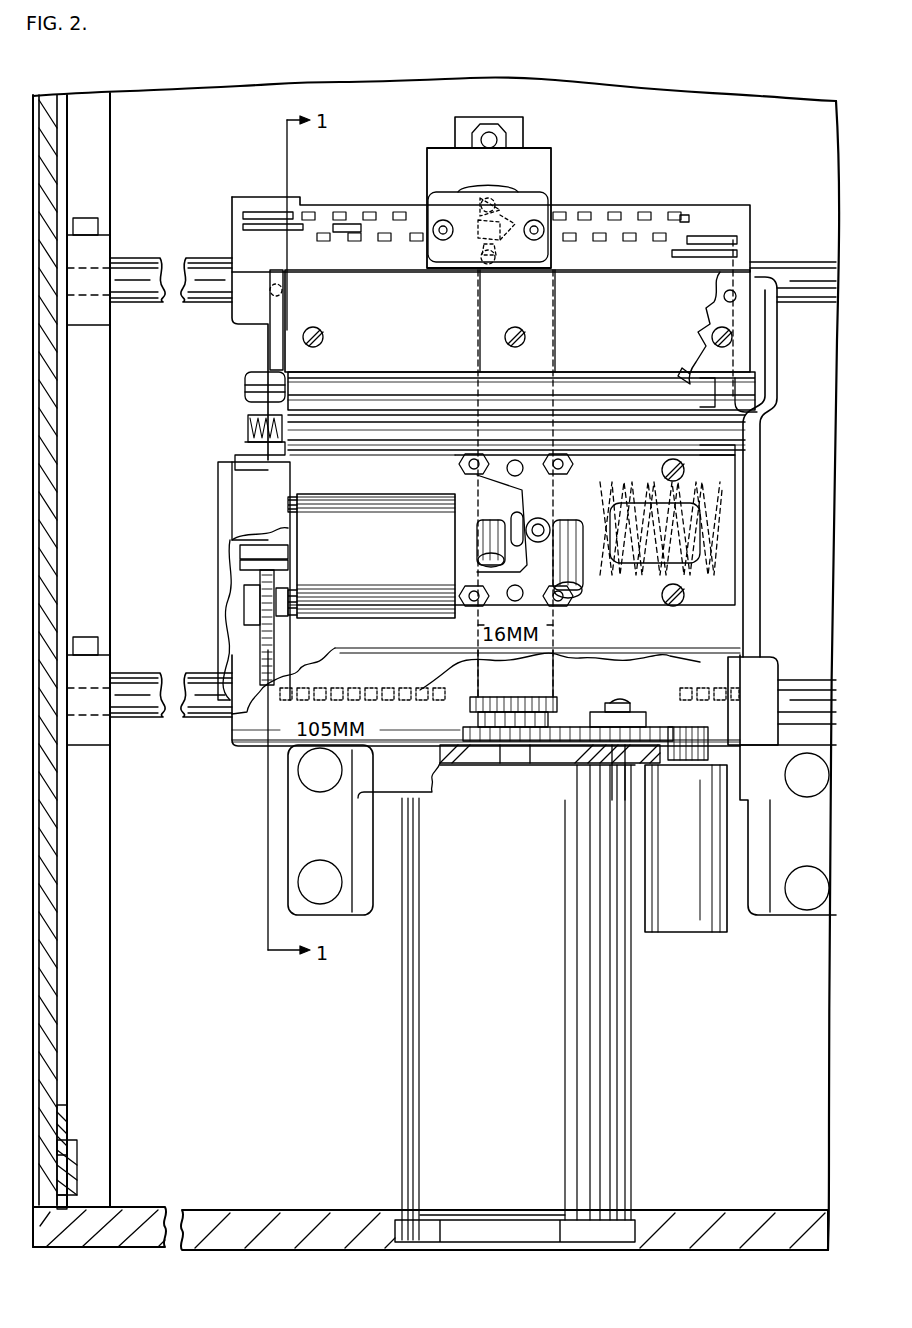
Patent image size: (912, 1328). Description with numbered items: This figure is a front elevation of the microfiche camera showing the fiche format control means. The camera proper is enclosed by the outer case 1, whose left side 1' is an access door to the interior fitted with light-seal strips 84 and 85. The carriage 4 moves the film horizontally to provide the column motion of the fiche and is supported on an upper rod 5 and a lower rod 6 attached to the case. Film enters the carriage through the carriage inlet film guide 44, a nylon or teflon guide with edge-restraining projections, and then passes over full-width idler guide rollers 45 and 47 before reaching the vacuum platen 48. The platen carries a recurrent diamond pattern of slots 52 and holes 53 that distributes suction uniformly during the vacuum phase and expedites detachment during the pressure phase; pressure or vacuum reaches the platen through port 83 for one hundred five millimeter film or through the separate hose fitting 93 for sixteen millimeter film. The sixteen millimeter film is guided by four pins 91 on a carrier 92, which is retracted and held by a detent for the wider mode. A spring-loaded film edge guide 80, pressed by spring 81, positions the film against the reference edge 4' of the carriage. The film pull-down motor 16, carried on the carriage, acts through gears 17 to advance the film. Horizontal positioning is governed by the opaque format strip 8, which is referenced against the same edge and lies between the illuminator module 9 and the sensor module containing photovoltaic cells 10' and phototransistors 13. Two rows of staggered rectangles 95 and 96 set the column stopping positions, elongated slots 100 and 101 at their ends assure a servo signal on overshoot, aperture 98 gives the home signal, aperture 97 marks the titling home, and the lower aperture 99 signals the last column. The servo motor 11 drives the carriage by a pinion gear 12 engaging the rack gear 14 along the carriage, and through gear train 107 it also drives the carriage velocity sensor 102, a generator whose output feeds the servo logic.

The outer case 1 is at (430, 1215).
The left side of the outer case 1' is at (426, 663).
The carriage 4 is at (762, 511).
The reference edge 4' is at (728, 416).
The upper rod 5 is at (795, 274).
The lower rod 6 is at (145, 684).
The linear format control means 8 is at (624, 208).
The illumination means 9 is at (462, 264).
The photovoltaic rectangular cell 10' is at (515, 228).
The servo motor 11 is at (496, 947).
The carriage drive pinion gear 12 is at (550, 708).
The phototransistor means 13 is at (488, 194).
The rack gear 14 is at (400, 696).
The film pull-down motor 16 is at (390, 565).
The gears 17 is at (240, 566).
The carriage inlet film guide 44 is at (280, 272).
The idler guide roller 45 is at (521, 391).
The idler guide roller 47 is at (516, 432).
The vacuum platen 48 is at (588, 502).
The slots 52 is at (662, 535).
The holes 53 is at (650, 484).
The spring-loaded film edge guide 80 is at (270, 420).
The spring 81 is at (262, 443).
The port 83 is at (582, 590).
The light-seal strip 84 is at (64, 1130).
The light-seal strip 85 is at (72, 1180).
The pins 91 is at (558, 454).
The carrier 92 is at (546, 588).
The pressure/vacuum hose fitting 93 is at (488, 525).
The staggered rectangles 95 is at (688, 218).
The staggered rectangles 96 is at (655, 245).
The aperture 97 is at (252, 231).
The aperture 98 is at (345, 224).
The lower aperture 99 is at (690, 258).
The elongated slot 100 is at (262, 212).
The elongated slot 101 is at (712, 240).
The carriage velocity sensor 102 is at (698, 834).
The gear train 107 is at (560, 734).